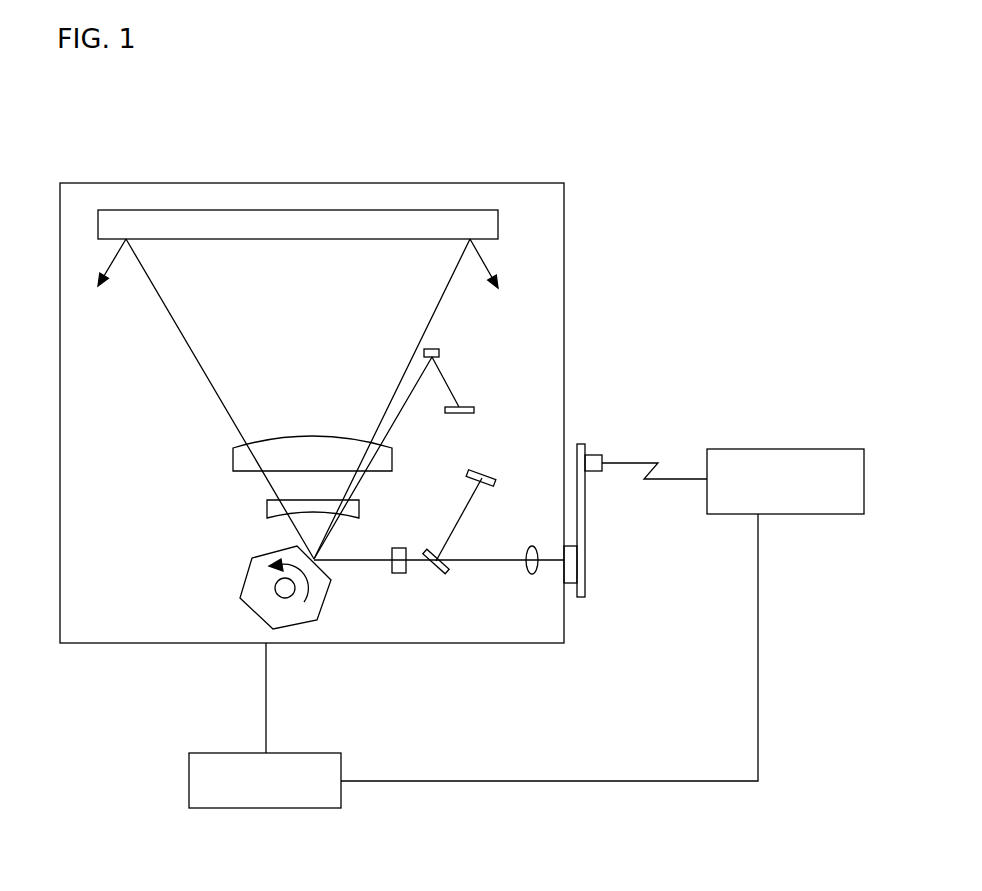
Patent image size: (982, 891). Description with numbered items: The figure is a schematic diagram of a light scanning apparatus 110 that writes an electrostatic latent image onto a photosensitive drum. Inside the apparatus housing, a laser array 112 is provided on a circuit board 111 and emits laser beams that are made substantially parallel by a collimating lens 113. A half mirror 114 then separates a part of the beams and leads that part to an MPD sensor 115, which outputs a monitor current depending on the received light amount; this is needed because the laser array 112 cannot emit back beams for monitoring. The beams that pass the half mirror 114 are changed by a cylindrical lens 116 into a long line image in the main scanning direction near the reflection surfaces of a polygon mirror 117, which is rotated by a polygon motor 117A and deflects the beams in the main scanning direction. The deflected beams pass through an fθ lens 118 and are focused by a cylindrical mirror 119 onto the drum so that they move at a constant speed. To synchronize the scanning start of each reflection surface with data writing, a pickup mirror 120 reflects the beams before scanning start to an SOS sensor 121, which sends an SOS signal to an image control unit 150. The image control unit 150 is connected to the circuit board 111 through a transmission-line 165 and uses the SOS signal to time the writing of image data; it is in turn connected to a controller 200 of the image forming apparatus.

The light scanning apparatus 110 is at (405, 183).
The circuit board 111 is at (585, 517).
The laser array 112 is at (572, 583).
The collimating lens 113 is at (532, 574).
The half mirror 114 is at (440, 573).
The monitoring photodiode (MPD) sensor 115 is at (476, 470).
The cylindrical lens 116 is at (393, 573).
The polygon mirror 117 is at (248, 573).
The polygon motor 117A is at (277, 595).
The fθ lens 118 is at (220, 429).
The cylindrical mirror 119 is at (299, 232).
The pickup mirror 120 is at (430, 349).
The main scanning synchronous (SOS) sensor 121 is at (468, 404).
The image control unit 150 is at (775, 449).
The transmission-line 165 is at (636, 462).
The controller 200 is at (256, 808).